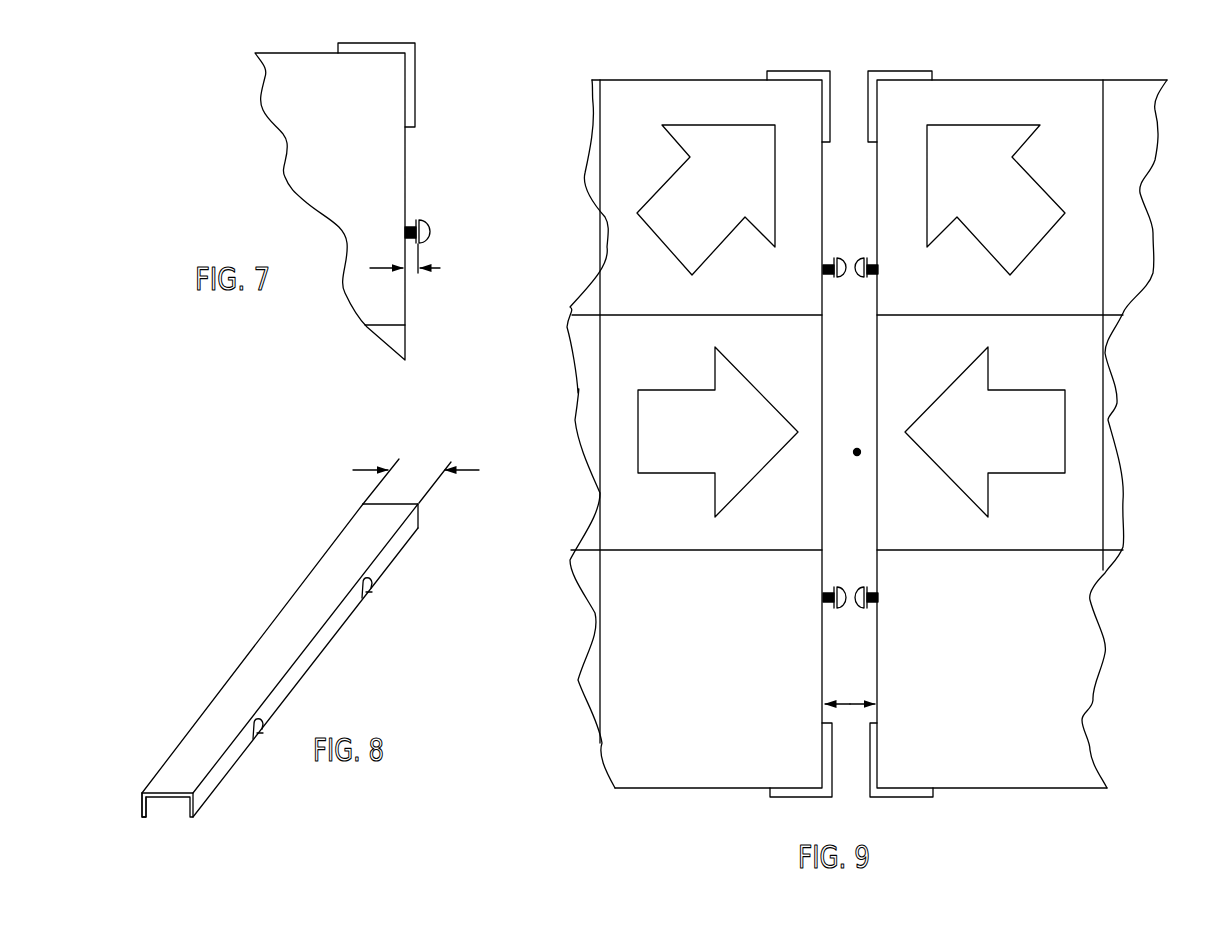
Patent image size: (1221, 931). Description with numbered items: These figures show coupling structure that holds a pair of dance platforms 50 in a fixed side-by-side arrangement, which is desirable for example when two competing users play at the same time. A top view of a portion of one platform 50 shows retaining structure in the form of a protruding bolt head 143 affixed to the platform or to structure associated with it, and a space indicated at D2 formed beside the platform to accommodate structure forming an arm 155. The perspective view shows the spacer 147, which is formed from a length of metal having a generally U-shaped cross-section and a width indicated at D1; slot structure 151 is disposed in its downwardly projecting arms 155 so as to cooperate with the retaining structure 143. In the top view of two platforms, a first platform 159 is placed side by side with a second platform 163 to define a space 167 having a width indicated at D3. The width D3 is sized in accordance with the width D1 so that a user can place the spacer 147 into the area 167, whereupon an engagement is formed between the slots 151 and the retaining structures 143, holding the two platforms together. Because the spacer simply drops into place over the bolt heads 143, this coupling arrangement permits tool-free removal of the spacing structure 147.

In FIG. 7, the dance platform 50 is at (440, 92).
In FIG. 7, the protruding bolt head 143 is at (424, 219).
In FIG. 9, the protruding bolt head 143 is at (864, 279).
In FIG. 8, the spacer 147 is at (294, 632).
In FIG. 8, the slot structure 151 is at (370, 604).
In FIG. 8, the downwardly projecting arm 155 is at (184, 809).
In FIG. 9, the first platform 159 is at (590, 752).
In FIG. 9, the second platform 163 is at (1136, 616).
In FIG. 9, the space 167 is at (854, 452).
In FIG. 8, the width of spacer D1 is at (417, 470).
In FIG. 7, the space for arm D2 is at (440, 268).
In FIG. 9, the width of space between platforms D3 is at (853, 702).